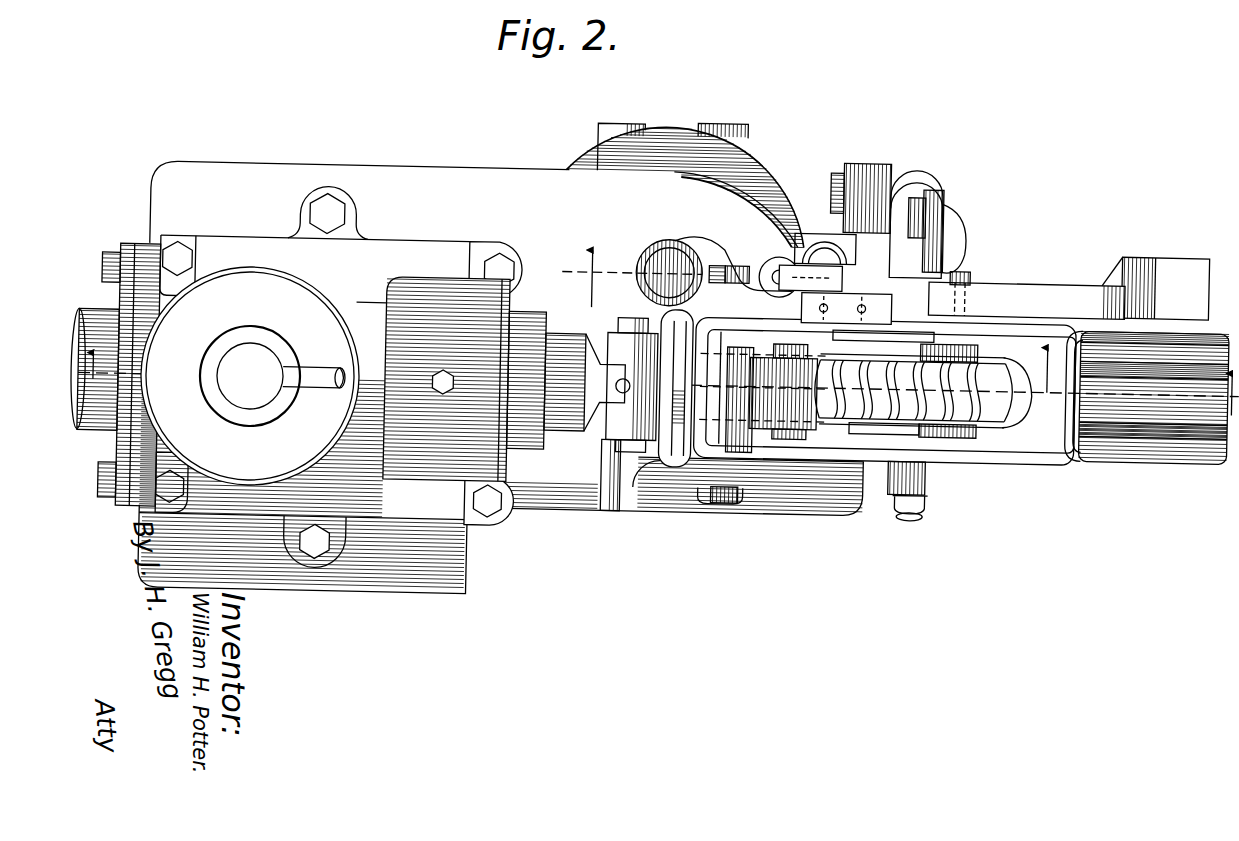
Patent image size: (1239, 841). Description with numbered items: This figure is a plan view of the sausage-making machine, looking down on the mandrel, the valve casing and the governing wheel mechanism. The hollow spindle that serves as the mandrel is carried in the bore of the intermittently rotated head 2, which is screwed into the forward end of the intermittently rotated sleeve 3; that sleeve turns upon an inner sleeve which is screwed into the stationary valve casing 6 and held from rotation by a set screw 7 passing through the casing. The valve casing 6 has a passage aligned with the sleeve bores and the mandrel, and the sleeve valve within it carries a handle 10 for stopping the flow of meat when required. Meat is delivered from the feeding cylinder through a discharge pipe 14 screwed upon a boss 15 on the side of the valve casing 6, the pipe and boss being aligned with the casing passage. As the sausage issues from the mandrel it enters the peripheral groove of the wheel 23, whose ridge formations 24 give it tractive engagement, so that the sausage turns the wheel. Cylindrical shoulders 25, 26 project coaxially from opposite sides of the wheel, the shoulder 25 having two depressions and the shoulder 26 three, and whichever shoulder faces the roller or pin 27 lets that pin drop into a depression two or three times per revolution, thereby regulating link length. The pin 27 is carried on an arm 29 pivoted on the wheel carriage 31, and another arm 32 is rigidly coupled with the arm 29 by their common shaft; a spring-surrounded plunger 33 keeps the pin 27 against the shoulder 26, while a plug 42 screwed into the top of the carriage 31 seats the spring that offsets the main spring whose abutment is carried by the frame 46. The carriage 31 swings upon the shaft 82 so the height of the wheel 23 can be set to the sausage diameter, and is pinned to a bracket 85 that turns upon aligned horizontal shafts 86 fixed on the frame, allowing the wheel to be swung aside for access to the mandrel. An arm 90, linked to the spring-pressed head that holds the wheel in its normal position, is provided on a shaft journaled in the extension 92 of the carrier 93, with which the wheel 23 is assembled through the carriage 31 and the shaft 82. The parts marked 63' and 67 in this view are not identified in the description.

The head 2 is at (563, 350).
The sleeve 3 is at (533, 325).
The valve casing 6 is at (308, 285).
The set screw 7 is at (380, 360).
The handle 10 is at (308, 368).
The discharge pipe 14 is at (96, 322).
The boss 15 is at (122, 250).
The peripherally grooved wheel 23 is at (997, 404).
The ridge formations 24 is at (1000, 400).
The shoulder 25 is at (980, 340).
The shoulder 26 is at (977, 335).
The roller or pin 27 is at (933, 329).
The arm 29 is at (920, 255).
The wheel carriage 31 is at (1035, 309).
The arm 32 is at (797, 222).
The plunger 33 is at (715, 259).
The plug 42 is at (873, 281).
The frame 46 is at (852, 492).
The arm 63' is at (986, 263).
The screw 67 is at (909, 184).
The shaft 82 is at (722, 495).
The bracket 85 is at (1147, 242).
The horizontal shafts 86 is at (933, 190).
The arm 90 is at (932, 207).
The extension 92 is at (808, 256).
The carrier 93 is at (672, 458).